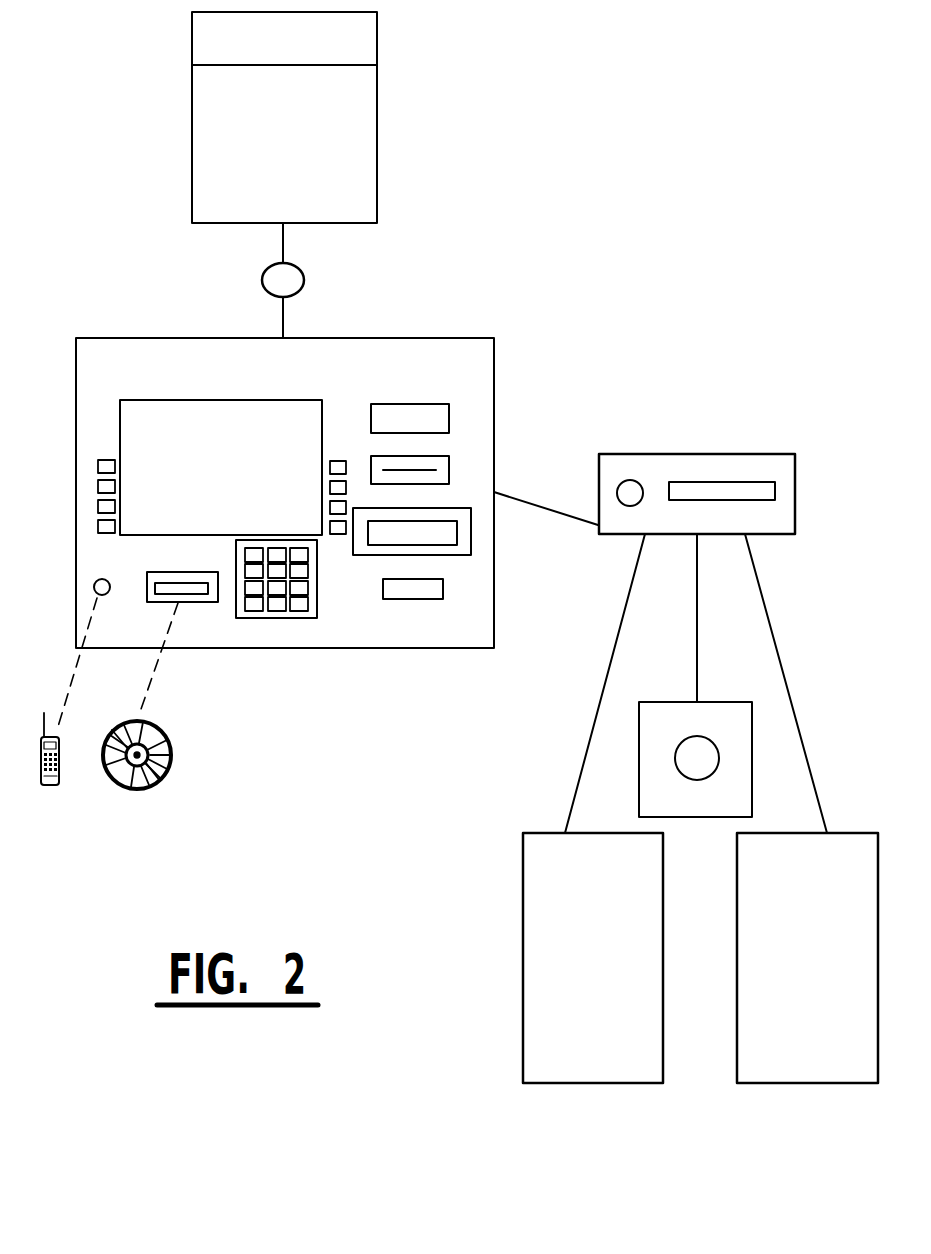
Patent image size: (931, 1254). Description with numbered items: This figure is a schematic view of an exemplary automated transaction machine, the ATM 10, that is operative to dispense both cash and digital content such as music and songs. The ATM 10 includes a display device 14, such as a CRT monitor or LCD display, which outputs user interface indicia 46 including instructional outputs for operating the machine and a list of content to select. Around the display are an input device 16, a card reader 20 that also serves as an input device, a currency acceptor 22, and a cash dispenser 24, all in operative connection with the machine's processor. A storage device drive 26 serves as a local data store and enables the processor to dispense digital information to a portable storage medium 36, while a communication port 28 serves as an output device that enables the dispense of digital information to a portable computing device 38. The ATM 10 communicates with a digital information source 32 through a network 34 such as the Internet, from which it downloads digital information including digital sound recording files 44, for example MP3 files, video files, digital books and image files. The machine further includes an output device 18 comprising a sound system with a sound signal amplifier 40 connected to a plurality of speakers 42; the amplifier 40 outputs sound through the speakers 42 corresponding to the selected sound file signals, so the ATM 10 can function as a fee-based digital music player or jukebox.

The ATM 10 is at (443, 337).
The display device 14 is at (142, 400).
The input device 16 is at (98, 464).
The output device 18 is at (601, 426).
The card reader 20 is at (446, 466).
The currency acceptor 22 is at (442, 596).
The cash dispenser 24 is at (472, 554).
The storage device drive 26 is at (188, 603).
The communication port 28 is at (94, 584).
The digital information source 32 is at (373, 50).
The network 34 is at (305, 283).
The portable storage medium 36 is at (172, 755).
The portable computing device 38 is at (57, 787).
The sound signal amplifier 40 is at (732, 454).
The speakers 42 is at (702, 702).
The digital sound recording files 44 is at (362, 101).
The user interface indicia 46 is at (262, 410).